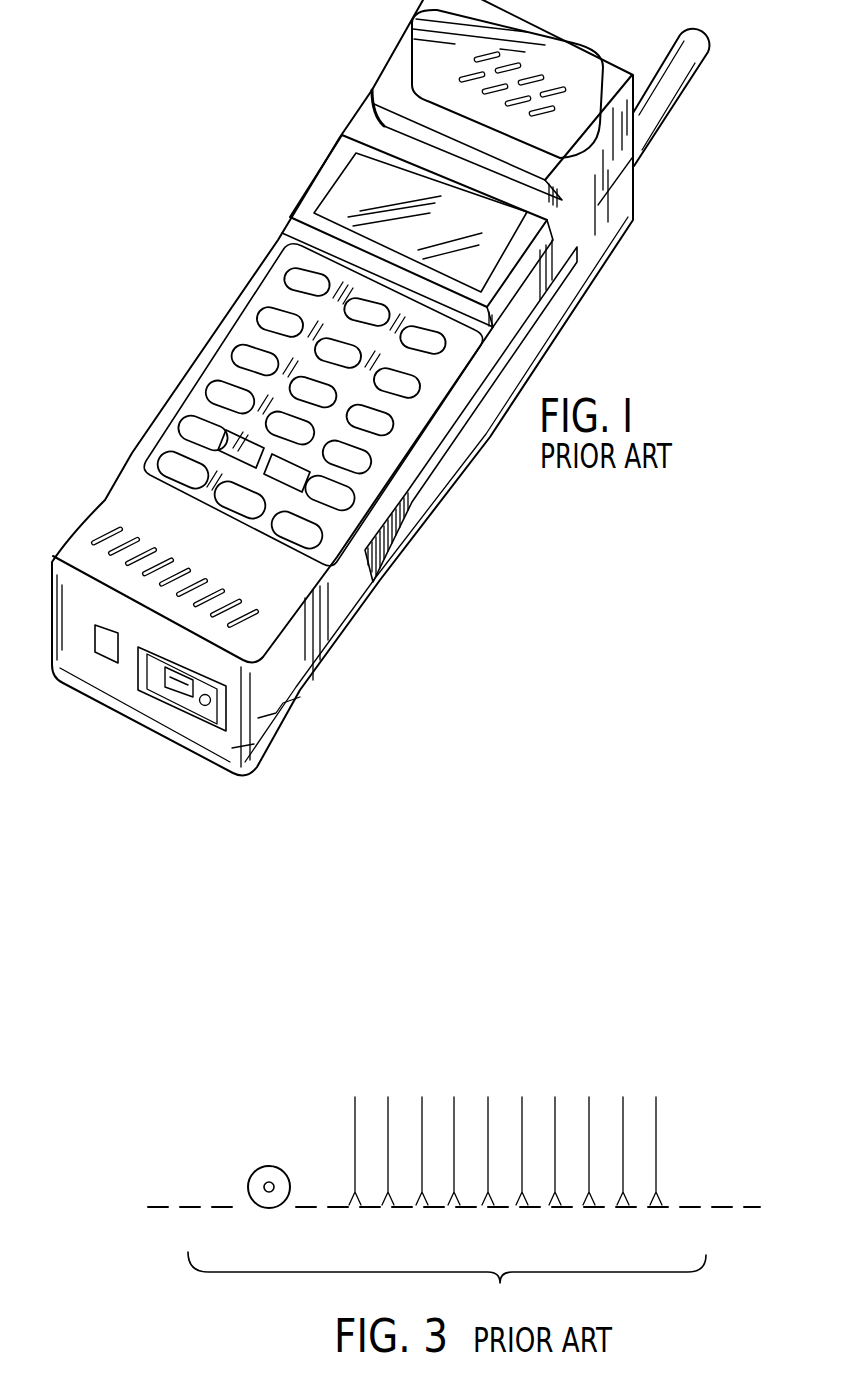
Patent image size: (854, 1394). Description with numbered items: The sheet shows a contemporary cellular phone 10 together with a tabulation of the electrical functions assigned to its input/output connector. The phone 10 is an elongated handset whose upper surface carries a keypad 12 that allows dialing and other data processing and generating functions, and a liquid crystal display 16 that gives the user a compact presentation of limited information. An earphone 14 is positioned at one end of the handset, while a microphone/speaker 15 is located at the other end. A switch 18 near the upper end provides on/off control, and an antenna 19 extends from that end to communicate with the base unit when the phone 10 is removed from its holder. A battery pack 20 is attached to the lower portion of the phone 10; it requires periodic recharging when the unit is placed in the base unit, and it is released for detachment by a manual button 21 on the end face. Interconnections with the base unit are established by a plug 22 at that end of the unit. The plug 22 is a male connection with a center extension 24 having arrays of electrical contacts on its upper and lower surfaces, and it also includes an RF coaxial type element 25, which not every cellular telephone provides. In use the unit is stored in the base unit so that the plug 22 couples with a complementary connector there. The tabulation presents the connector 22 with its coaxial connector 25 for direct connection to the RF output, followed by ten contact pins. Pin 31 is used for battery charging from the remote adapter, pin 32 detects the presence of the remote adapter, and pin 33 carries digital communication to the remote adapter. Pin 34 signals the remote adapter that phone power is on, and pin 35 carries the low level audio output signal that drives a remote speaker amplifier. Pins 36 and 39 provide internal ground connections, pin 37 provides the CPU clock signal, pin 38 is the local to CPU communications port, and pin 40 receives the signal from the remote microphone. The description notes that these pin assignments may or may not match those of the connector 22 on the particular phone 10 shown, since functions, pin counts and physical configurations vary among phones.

In FIG. 1, the cellular phone 10 is at (240, 236).
In FIG. 1, the keypad 12 is at (221, 337).
In FIG. 1, the earphone 14 is at (422, 72).
In FIG. 1, the microphone/speaker 15 is at (109, 528).
In FIG. 1, the liquid crystal display 16 is at (357, 192).
In FIG. 1, the switch 18 is at (613, 180).
In FIG. 1, the antenna 19 is at (697, 84).
In FIG. 1, the battery pack 20 is at (390, 563).
In FIG. 1, the manual button 21 is at (102, 650).
In FIG. 1, the plug 22 is at (153, 695).
In FIG. 3, the plug 22 is at (447, 1284).
In FIG. 1, the center extension 24 is at (178, 689).
In FIG. 1, the RF coaxial type element 25 is at (209, 706).
In FIG. 3, the RF coaxial type element 25 is at (269, 1209).
In FIG. 3, the pin 31 is at (355, 1210).
In FIG. 3, the pin 32 is at (388, 1210).
In FIG. 3, the pin 33 is at (422, 1210).
In FIG. 3, the pin 34 is at (454, 1210).
In FIG. 3, the pin 35 is at (488, 1210).
In FIG. 3, the pin 36 is at (522, 1210).
In FIG. 3, the pin 37 is at (555, 1210).
In FIG. 3, the pin 38 is at (589, 1210).
In FIG. 3, the pin 39 is at (623, 1210).
In FIG. 3, the pin 40 is at (656, 1210).